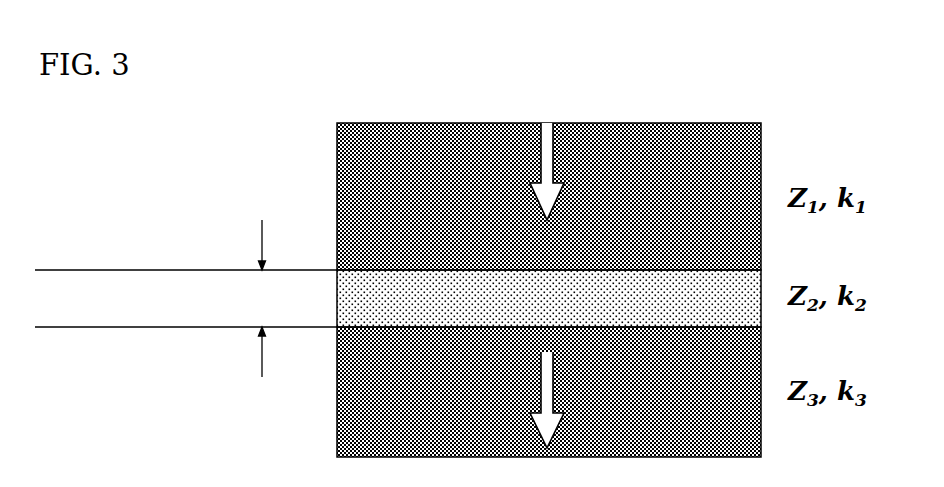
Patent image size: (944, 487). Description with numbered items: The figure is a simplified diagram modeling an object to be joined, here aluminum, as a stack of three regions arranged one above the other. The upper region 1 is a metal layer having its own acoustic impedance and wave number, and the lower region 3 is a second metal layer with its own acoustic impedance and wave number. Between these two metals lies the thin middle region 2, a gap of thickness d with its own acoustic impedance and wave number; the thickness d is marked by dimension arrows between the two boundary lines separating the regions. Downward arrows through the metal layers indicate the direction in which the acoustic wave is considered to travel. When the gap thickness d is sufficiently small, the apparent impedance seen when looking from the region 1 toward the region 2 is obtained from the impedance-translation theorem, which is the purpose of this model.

The region 1 is at (416, 196).
The region 2 is at (398, 298).
The region 3 is at (416, 392).